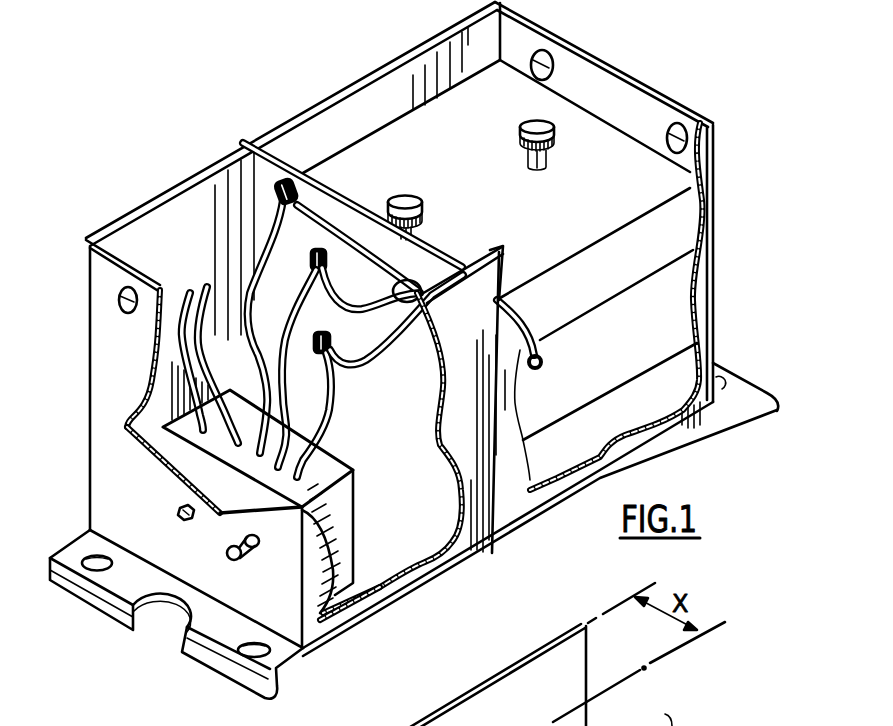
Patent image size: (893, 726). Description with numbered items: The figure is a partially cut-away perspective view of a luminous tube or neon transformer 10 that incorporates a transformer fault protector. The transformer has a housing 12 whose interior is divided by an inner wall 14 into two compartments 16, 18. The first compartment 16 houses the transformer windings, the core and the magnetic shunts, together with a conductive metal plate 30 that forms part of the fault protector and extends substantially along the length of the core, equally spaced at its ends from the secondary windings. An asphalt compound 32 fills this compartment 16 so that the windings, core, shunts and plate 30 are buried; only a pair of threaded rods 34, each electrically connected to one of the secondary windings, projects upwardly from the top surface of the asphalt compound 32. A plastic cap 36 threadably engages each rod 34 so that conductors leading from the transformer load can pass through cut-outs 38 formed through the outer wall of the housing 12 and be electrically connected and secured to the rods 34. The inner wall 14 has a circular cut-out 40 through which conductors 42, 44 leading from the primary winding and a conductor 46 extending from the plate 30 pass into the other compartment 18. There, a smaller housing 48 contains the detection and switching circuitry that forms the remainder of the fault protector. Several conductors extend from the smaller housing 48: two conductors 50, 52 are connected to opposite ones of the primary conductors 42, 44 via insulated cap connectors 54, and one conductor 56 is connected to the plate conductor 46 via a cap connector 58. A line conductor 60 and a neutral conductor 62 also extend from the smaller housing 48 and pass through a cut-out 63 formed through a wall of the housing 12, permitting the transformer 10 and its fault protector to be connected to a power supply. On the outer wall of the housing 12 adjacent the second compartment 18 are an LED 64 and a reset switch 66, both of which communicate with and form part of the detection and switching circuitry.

The luminous tube transformer 10 is at (192, 117).
The housing 12 is at (100, 349).
The inner wall 14 is at (263, 170).
The compartment 16 is at (605, 88).
The compartment 18 is at (143, 236).
The conductive metal plate 30 is at (660, 308).
The asphalt compound 32 is at (633, 197).
The threaded rods 34 is at (414, 231).
The plastic cap 36 is at (406, 198).
The cut-outs 38 is at (548, 78).
The circular cut-out 40 is at (414, 322).
The conductor 42 is at (357, 306).
The conductor 44 is at (357, 362).
The conductor 46 is at (340, 222).
The smaller housing 48 is at (450, 553).
The conductor 50 is at (300, 298).
The conductor 52 is at (322, 413).
The insulated cap connectors 54 is at (313, 256).
The conductor 56 is at (275, 231).
The cap connector 58 is at (288, 178).
The line conductor 60 is at (153, 374).
The neutral conductor 62 is at (178, 450).
The cut-out 63 is at (118, 300).
The LED 64 is at (183, 522).
The reset switch 66 is at (236, 561).